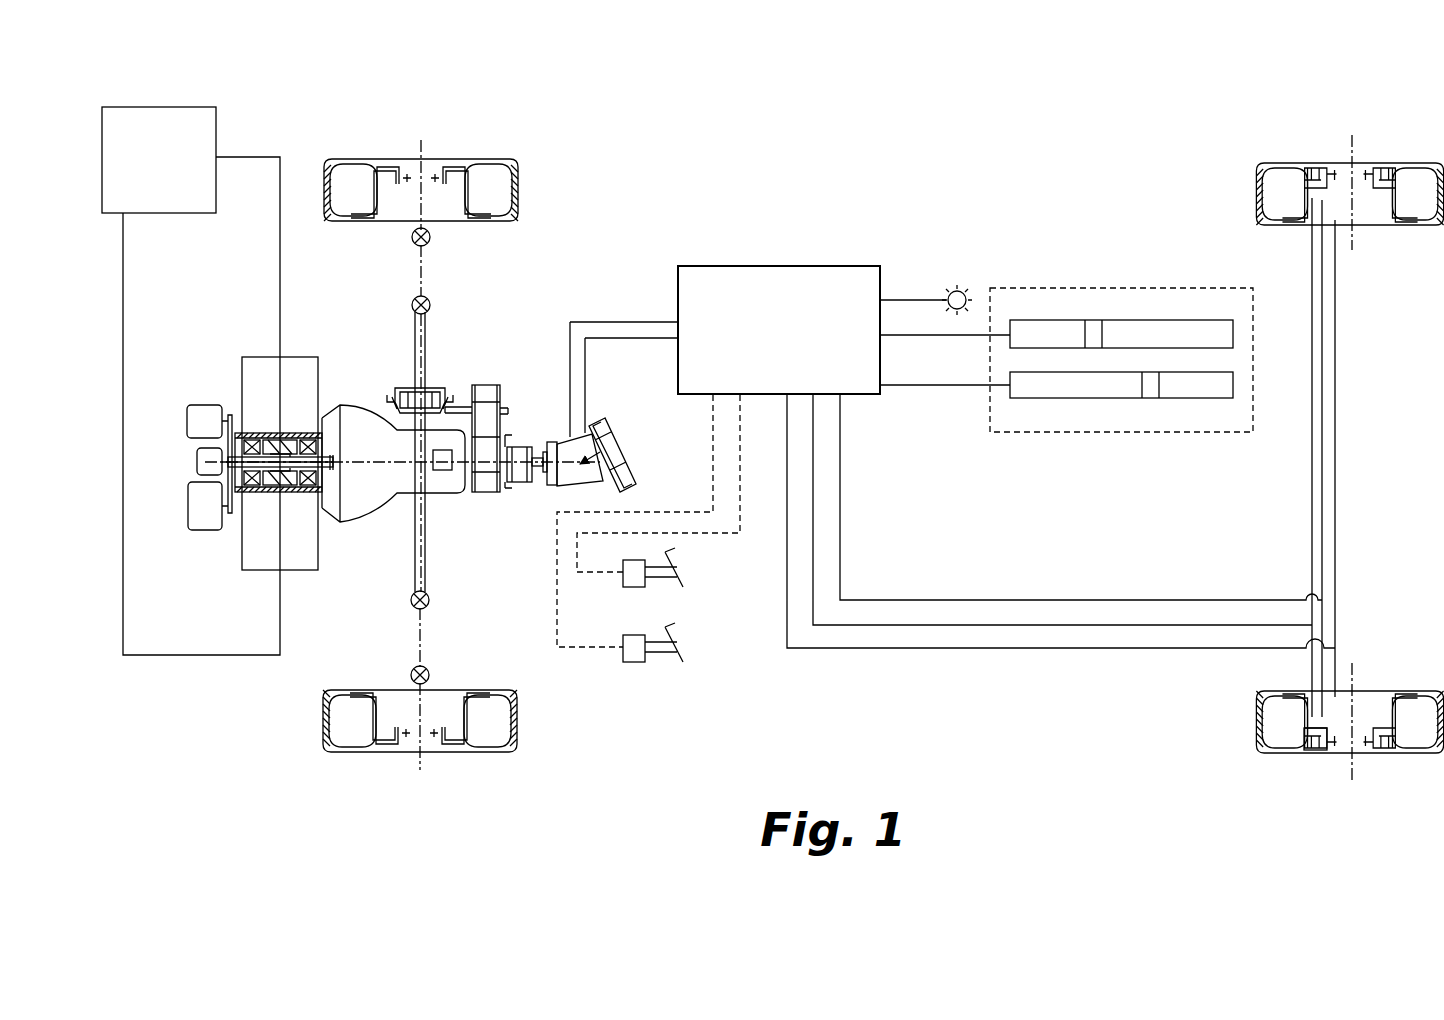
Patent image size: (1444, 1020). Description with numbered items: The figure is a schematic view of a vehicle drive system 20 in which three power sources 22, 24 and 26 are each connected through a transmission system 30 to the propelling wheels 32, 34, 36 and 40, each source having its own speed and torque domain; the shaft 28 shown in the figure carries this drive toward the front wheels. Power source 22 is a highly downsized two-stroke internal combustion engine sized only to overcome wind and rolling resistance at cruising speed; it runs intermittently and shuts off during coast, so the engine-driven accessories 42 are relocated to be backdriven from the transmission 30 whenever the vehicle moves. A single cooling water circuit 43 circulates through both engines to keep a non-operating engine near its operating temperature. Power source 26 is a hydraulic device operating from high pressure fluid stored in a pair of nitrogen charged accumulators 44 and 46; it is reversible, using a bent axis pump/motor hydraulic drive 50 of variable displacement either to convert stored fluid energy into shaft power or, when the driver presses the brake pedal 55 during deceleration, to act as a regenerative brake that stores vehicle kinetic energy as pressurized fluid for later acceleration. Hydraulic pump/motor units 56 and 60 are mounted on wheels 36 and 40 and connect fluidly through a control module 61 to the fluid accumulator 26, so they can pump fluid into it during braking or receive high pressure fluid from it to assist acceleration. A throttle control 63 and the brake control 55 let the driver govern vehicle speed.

The vehicle drive system 20 is at (712, 178).
The power source 22 is at (255, 362).
The power source 24 is at (250, 547).
The power source 26 is at (1055, 288).
The front drive shaft 28 is at (377, 410).
The transmission system 30 is at (370, 503).
The propelling wheel 32 is at (473, 160).
The propelling wheel 34 is at (477, 752).
The propelling wheel 36 is at (1278, 165).
The propelling wheel 40 is at (1420, 753).
The accessories 42 is at (195, 423).
The cooling water circuit 43 is at (216, 138).
The accumulator 44 is at (1220, 335).
The accumulator 46 is at (1220, 387).
The pump/motor hydraulic drive 50 is at (612, 440).
The brake pedal 55 is at (683, 647).
The hydraulic pump/motor unit 56 is at (1387, 168).
The hydraulic pump/motor unit 60 is at (1315, 753).
The control module 61 is at (810, 266).
The throttle control 63 is at (683, 572).